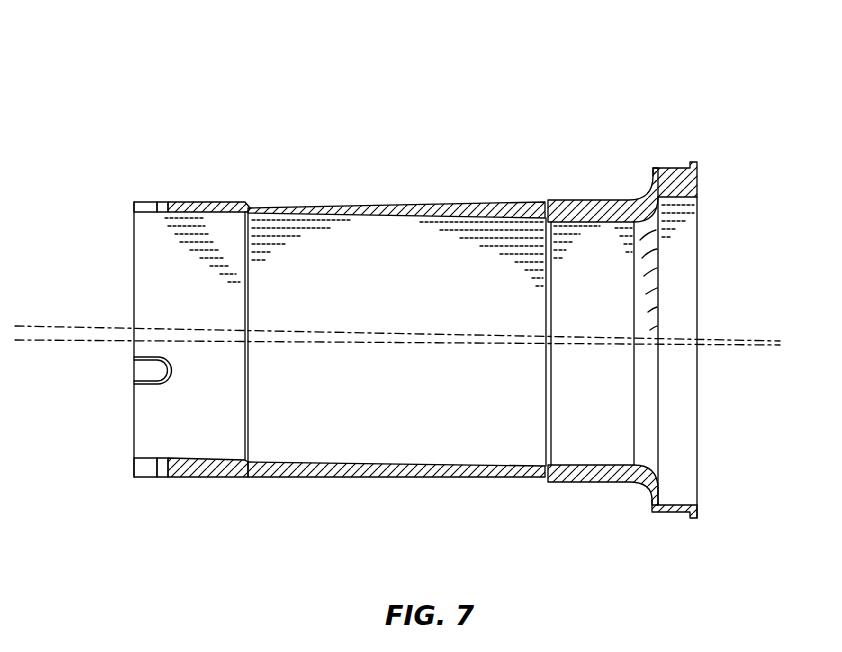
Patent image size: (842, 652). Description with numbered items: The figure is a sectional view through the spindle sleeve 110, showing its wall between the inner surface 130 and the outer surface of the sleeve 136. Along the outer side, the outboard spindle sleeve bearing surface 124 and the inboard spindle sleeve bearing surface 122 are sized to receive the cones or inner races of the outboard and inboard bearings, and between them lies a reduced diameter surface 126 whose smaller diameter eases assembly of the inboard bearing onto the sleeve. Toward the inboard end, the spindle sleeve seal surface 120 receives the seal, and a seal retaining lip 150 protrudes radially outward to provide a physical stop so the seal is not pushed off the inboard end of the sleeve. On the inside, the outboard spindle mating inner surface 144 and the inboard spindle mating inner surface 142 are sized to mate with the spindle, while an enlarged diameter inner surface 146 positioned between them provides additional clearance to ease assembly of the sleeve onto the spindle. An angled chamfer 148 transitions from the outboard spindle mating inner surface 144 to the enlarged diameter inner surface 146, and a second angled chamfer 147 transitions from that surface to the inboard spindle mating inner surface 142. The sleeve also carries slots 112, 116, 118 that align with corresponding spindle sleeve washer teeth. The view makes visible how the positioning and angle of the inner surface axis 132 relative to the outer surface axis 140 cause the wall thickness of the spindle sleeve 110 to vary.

The spindle sleeve 110 is at (180, 70).
The slot 112 is at (136, 365).
The slot 116 is at (146, 200).
The slot 118 is at (142, 471).
The spindle sleeve seal surface 120 is at (693, 165).
The inboard spindle sleeve bearing surface 122 is at (582, 484).
The outboard spindle sleeve bearing surface 124 is at (212, 479).
The reduced diameter surface 126 is at (357, 204).
The inner surface 130 is at (272, 215).
The inner surface axis 132 is at (78, 326).
The outer surface of the sleeve 136 is at (592, 199).
The outer surface axis 140 is at (48, 342).
The inboard spindle mating inner surface 142 is at (572, 226).
The outboard spindle mating inner surface 144 is at (166, 214).
The enlarged diameter inner surface 146 is at (401, 217).
The second angled chamfer 147 is at (548, 462).
The angled chamfer 148 is at (249, 378).
The seal retaining lip 150 is at (697, 519).